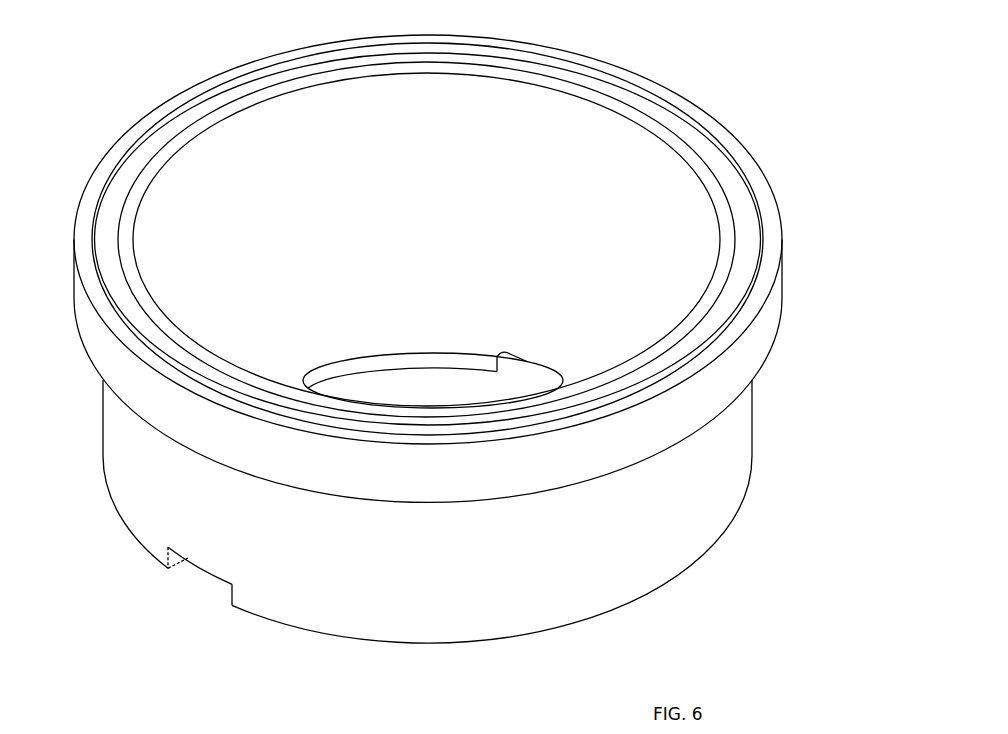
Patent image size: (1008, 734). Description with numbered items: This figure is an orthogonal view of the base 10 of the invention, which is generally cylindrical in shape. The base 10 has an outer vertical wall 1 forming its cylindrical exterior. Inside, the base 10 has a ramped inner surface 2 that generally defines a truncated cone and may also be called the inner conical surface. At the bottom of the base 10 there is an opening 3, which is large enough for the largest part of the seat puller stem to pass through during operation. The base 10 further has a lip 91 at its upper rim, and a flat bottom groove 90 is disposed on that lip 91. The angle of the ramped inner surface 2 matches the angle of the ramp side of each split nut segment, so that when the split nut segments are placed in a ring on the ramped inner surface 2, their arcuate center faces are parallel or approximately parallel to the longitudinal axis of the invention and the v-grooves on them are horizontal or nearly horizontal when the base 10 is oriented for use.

The base 10 is at (798, 305).
The outer vertical wall 1 is at (753, 418).
The ramped inner surface 2 is at (541, 197).
The opening 3 is at (404, 391).
The flat bottom groove 90 is at (747, 200).
The lip 91 is at (85, 343).